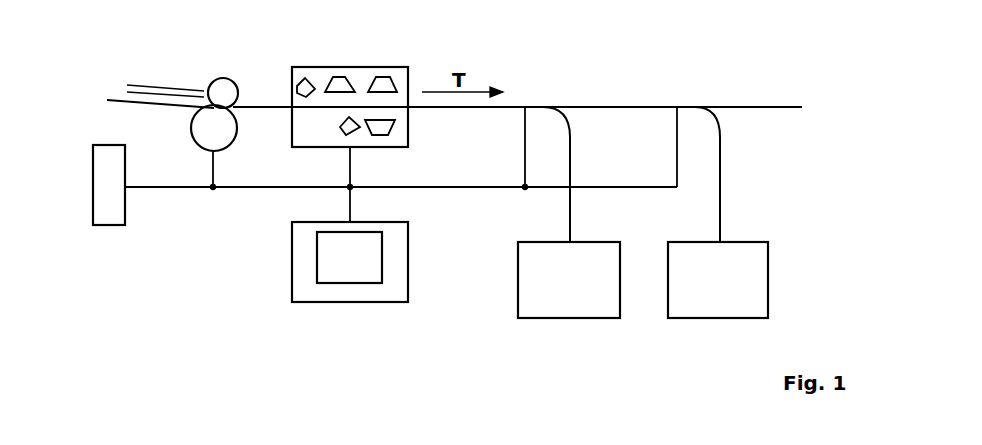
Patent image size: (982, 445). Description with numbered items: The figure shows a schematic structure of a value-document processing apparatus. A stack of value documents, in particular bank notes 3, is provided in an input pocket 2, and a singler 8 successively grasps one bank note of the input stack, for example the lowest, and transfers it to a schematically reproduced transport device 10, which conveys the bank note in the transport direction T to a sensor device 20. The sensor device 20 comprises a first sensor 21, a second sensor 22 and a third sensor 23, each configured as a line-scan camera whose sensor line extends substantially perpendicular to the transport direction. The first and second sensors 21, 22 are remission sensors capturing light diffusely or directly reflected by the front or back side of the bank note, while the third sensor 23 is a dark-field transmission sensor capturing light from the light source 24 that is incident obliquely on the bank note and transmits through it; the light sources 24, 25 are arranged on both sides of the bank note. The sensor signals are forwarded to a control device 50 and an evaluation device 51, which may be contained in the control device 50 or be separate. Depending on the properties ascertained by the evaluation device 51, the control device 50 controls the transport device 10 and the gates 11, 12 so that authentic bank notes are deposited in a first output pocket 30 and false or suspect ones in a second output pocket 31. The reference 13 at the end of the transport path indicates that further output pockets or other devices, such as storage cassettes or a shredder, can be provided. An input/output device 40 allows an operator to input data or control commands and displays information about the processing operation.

The input pocket 2 is at (117, 98).
The bank notes 3 is at (167, 87).
The singler 8 is at (230, 135).
The transport device 10 is at (260, 107).
The gate 11 is at (530, 105).
The gate 12 is at (686, 105).
The end of the transport path 13 is at (791, 105).
The sensor device 20 is at (366, 69).
The first sensor 21 is at (335, 77).
The second sensor 22 is at (393, 130).
The third sensor 23 is at (395, 80).
The light source 24 is at (342, 135).
The light source 25 is at (307, 83).
The first output pocket 30 is at (588, 252).
The second output pocket 31 is at (743, 250).
The input/output device 40 is at (97, 215).
The control device 50 is at (350, 287).
The evaluation device 51 is at (317, 292).